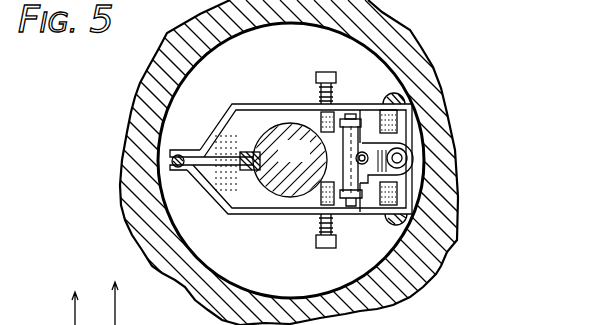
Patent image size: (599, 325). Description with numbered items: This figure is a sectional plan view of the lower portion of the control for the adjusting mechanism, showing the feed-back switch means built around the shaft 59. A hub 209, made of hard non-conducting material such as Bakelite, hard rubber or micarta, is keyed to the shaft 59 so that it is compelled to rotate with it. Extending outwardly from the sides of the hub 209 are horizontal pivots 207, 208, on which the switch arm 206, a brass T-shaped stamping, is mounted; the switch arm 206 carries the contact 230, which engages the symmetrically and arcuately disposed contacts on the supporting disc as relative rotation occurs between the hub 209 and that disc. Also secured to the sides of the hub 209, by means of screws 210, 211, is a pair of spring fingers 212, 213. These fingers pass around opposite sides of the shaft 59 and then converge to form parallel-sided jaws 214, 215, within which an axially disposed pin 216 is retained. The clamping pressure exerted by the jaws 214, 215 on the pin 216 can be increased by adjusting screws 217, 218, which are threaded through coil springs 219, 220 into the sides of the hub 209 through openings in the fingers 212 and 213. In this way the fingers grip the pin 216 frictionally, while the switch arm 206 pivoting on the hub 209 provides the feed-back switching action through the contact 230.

The shaft 59 is at (308, 161).
The switch arm 206 is at (400, 143).
The horizontal pivot 207 is at (352, 204).
The horizontal pivot 208 is at (350, 114).
The hub 209 is at (243, 130).
The screw 210 is at (400, 100).
The screw 211 is at (400, 217).
The spring finger 212 is at (272, 104).
The spring finger 213 is at (248, 216).
The jaw 214 is at (193, 148).
The jaw 215 is at (192, 172).
The pin 216 is at (172, 161).
The adjusting screw 217 is at (325, 72).
The adjusting screw 218 is at (322, 249).
The coil spring 219 is at (320, 92).
The coil spring 220 is at (320, 224).
The contact 230 is at (407, 158).